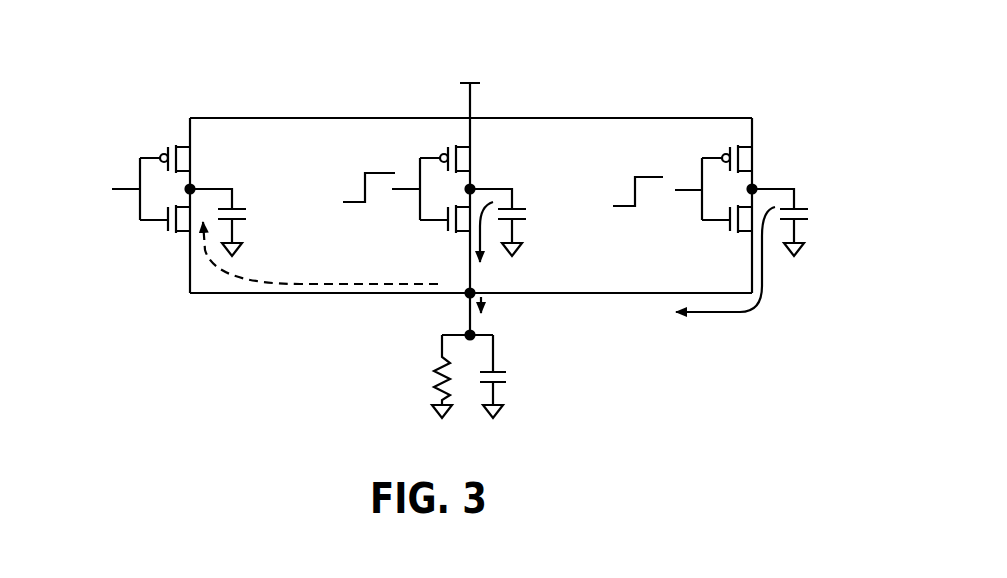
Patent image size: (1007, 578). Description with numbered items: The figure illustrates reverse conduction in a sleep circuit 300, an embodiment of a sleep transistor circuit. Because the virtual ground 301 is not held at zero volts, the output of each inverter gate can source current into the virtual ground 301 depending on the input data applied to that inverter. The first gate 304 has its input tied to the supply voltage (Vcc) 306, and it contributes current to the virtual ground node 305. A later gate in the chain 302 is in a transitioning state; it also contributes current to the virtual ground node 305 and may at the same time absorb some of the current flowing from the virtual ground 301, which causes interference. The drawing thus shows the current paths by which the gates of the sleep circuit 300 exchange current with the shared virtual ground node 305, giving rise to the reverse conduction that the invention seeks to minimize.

The sleep circuit 300 is at (747, 72).
The virtual ground 301 is at (155, 325).
The gate in the chain 302 is at (490, 253).
The first gate 304 is at (207, 251).
The virtual ground node 305 is at (457, 303).
The supply voltage (Vcc) 306 is at (423, 52).